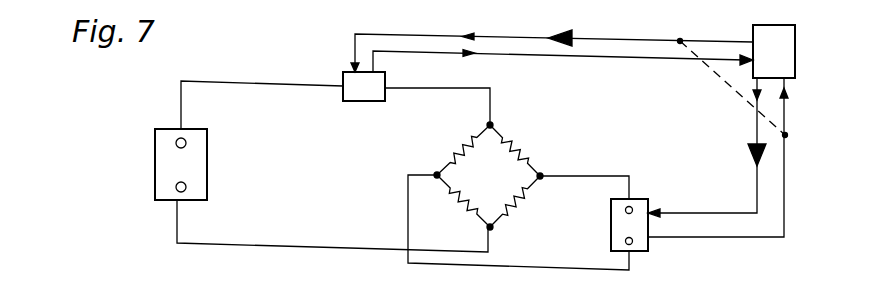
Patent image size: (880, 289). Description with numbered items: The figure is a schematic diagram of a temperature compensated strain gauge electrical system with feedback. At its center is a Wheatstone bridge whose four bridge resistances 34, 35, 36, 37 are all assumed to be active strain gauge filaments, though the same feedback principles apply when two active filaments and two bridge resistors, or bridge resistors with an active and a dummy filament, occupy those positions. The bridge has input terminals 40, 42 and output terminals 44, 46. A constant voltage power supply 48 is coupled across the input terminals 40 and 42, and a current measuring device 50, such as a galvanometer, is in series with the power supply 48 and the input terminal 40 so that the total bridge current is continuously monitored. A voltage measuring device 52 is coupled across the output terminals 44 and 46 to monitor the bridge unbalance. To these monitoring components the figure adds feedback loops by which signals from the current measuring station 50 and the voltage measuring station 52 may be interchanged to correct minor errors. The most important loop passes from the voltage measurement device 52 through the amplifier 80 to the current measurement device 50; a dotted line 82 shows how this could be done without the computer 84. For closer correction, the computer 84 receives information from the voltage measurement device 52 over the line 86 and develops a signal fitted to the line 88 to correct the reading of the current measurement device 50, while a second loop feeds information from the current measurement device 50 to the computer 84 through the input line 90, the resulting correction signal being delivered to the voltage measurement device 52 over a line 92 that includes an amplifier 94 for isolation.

The strain gauge 34 is at (512, 141).
The strain gauge 35 is at (458, 212).
The strain gauge 36 is at (516, 204).
The strain gauge 37 is at (461, 150).
The input terminal 40 is at (493, 123).
The input terminal 42 is at (493, 230).
The output terminal 44 is at (437, 178).
The output terminal 46 is at (545, 172).
The power supply 48 is at (205, 129).
The current measuring device 50 is at (387, 78).
The voltage measuring device 52 is at (640, 199).
The amplifier 80 is at (560, 30).
The dotted line 82 is at (718, 77).
The computer 84 is at (795, 25).
The line 86 is at (784, 183).
The line 88 is at (625, 40).
The input line 90 is at (585, 55).
The line 92 is at (757, 125).
The amplifier 94 is at (751, 152).